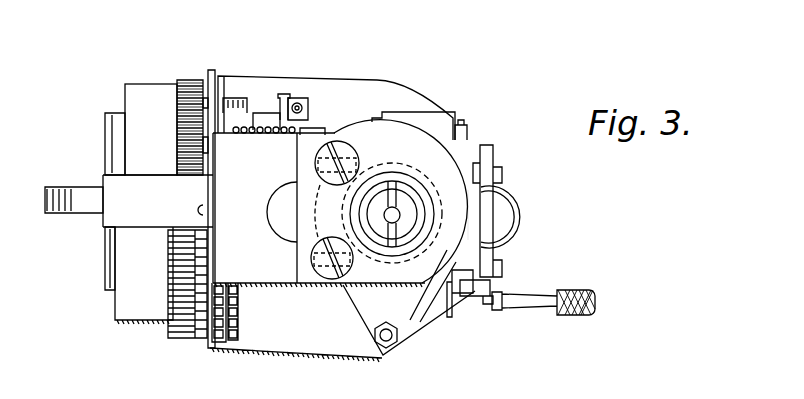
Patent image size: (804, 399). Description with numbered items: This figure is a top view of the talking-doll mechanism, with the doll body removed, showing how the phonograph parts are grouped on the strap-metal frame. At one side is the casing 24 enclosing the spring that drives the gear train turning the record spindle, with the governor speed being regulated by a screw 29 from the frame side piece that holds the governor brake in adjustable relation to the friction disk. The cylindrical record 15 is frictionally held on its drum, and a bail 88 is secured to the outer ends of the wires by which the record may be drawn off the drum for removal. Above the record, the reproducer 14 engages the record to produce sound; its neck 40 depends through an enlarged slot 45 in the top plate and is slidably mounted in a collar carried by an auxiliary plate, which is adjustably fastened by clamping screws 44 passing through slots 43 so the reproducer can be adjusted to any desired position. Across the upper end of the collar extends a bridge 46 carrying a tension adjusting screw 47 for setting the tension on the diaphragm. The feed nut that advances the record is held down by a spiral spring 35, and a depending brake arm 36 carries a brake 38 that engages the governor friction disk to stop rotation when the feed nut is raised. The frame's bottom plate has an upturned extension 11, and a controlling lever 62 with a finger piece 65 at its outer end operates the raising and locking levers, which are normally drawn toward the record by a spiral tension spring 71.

The casing 24 is at (151, 129).
The screw 29 is at (237, 98).
The spiral spring 35 is at (258, 127).
The brake arm 36 is at (268, 117).
The brake 38 is at (298, 103).
The cylindrical record 15 is at (436, 125).
The enlarged slot 45 is at (418, 170).
The clamping screws 44 is at (317, 153).
The slots 43 is at (374, 213).
The neck 40 is at (424, 212).
The tension adjusting screw 47 is at (398, 215).
The bridge 46 is at (395, 240).
The extension 11 is at (489, 162).
The reproducer 14 is at (478, 215).
The bail 88 is at (517, 230).
The controlling lever 62 is at (489, 288).
The finger piece 65 is at (595, 302).
The spiral tension spring 71 is at (470, 304).